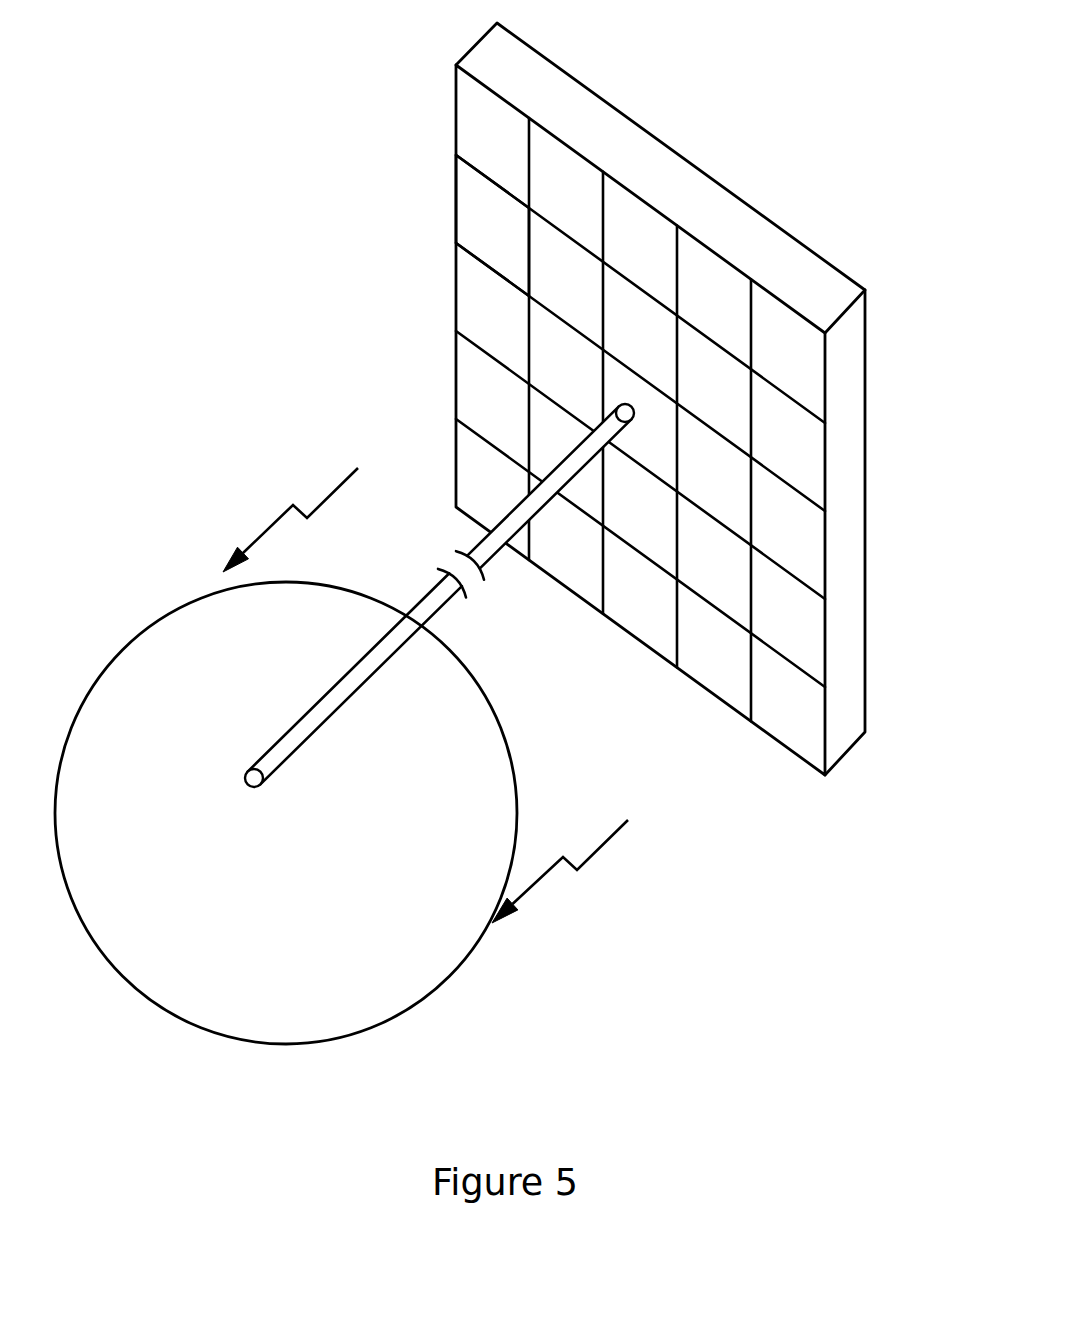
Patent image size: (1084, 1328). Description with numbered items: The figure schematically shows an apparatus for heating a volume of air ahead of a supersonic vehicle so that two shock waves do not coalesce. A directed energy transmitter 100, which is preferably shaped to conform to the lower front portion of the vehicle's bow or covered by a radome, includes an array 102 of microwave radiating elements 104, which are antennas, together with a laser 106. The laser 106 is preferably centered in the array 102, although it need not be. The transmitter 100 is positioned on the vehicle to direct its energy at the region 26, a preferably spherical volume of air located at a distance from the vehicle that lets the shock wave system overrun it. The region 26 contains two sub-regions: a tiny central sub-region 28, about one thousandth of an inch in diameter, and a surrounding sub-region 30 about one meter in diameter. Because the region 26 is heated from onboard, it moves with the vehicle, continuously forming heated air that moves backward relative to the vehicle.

The directed energy transmitter 100 is at (666, 398).
The array 102 is at (540, 158).
The microwave radiating elements 104 is at (480, 217).
The laser 106 is at (632, 407).
The region 26 is at (136, 999).
The sub-region 28 is at (247, 782).
The sub-region 30 is at (485, 780).